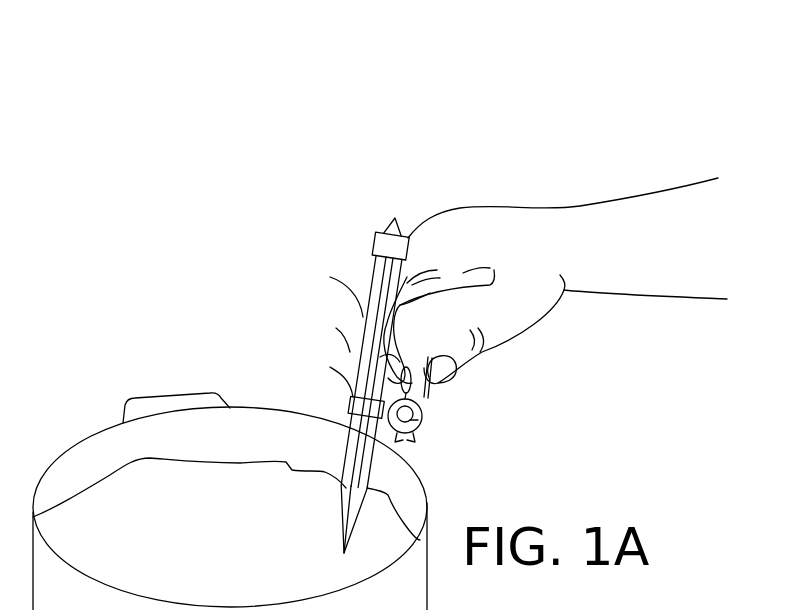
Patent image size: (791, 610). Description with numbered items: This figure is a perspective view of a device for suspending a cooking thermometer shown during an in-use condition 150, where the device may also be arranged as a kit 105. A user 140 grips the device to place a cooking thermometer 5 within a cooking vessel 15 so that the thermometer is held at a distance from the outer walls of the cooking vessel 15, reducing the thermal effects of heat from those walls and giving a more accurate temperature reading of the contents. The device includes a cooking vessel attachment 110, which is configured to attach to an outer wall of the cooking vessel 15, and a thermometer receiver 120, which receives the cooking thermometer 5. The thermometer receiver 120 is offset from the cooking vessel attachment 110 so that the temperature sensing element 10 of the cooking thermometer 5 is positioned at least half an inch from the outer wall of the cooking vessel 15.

The cooking thermometer 5 is at (362, 292).
The temperature sensing element 10 is at (343, 423).
The cooking vessel 15 is at (97, 437).
The kit 105 is at (580, 127).
The cooking vessel attachment 110 is at (418, 420).
The thermometer receiver 120 is at (353, 393).
The user 140 is at (452, 238).
The in-use condition 150 is at (620, 163).